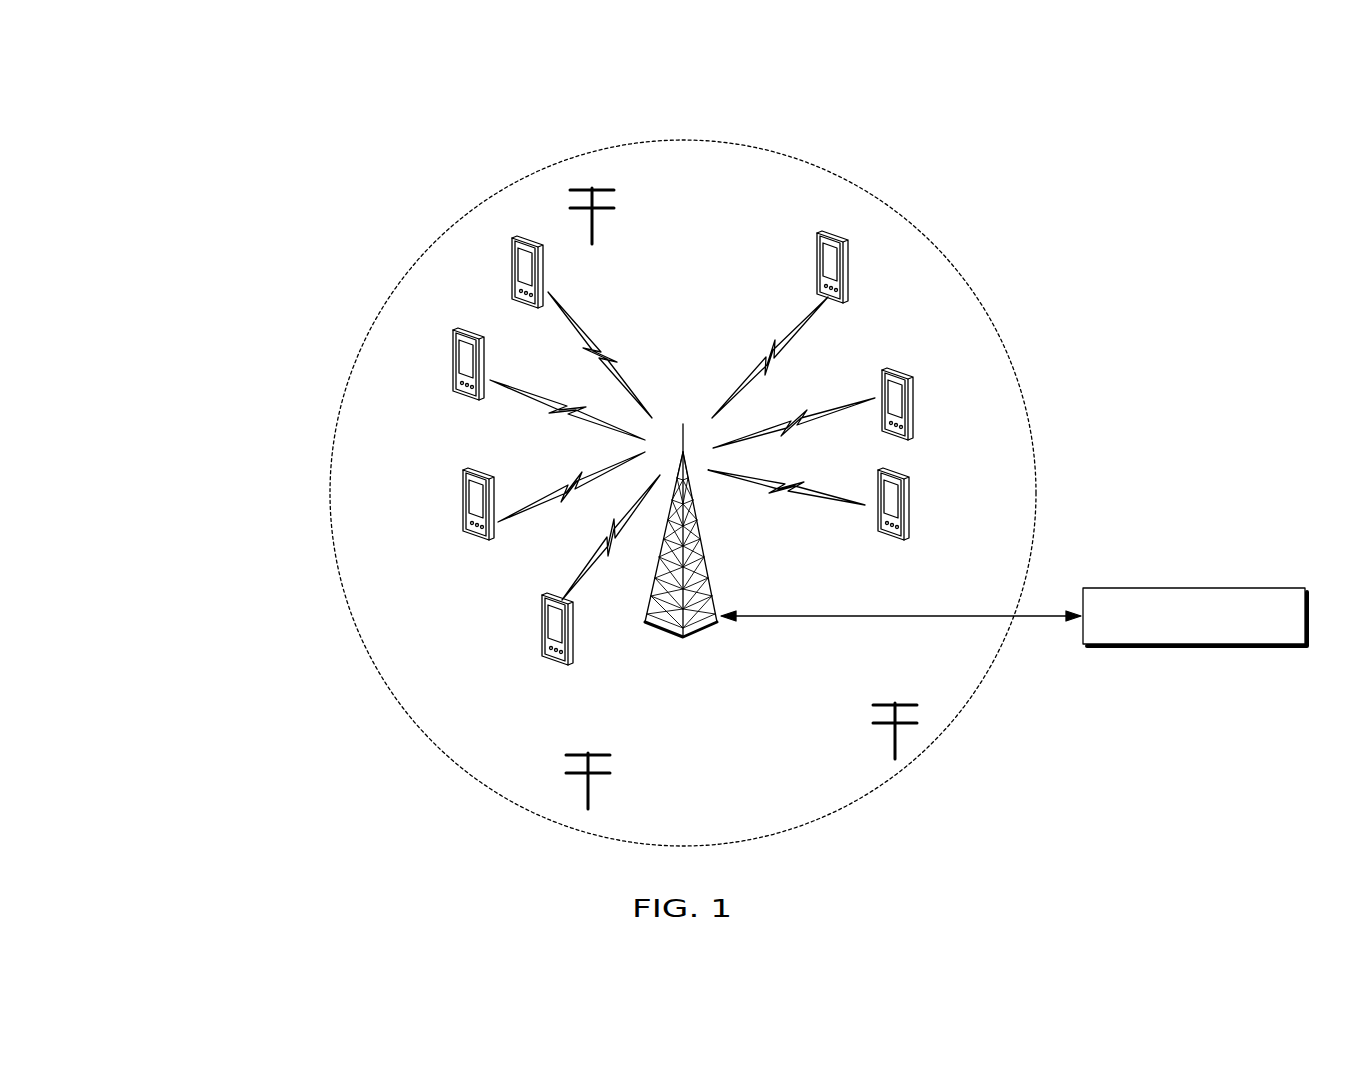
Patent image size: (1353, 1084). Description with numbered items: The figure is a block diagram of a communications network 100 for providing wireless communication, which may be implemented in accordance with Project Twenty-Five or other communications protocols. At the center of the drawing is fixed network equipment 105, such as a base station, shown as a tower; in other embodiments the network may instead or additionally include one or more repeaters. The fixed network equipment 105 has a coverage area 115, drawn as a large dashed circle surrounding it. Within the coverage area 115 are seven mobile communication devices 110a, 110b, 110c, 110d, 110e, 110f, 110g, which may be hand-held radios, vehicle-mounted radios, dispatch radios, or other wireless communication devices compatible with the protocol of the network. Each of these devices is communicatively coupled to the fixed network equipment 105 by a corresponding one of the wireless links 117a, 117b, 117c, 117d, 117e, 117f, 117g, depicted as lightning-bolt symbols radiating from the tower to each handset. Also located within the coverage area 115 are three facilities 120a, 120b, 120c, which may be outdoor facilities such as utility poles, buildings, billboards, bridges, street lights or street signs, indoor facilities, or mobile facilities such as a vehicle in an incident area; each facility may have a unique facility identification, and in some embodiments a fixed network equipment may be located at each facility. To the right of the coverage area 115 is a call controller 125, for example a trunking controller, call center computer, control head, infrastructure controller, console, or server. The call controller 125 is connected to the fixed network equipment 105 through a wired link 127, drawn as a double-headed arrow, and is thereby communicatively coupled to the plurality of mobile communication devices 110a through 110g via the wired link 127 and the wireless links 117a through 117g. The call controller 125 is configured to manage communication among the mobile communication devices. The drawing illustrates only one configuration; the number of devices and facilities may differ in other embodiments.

The communications network 100 is at (433, 171).
The fixed network equipment 105 is at (703, 630).
The mobile communication device 110a is at (541, 643).
The mobile communication device 110b is at (473, 532).
The mobile communication device 110c is at (463, 397).
The mobile communication device 110d is at (511, 273).
The mobile communication device 110e is at (852, 287).
The mobile communication device 110f is at (917, 405).
The mobile communication device 110g is at (913, 510).
The coverage area 115 is at (681, 140).
The wireless link 117a is at (597, 565).
The wireless link 117b is at (518, 517).
The wireless link 117c is at (512, 388).
The wireless link 117d is at (582, 332).
The wireless link 117e is at (818, 313).
The wireless link 117f is at (828, 430).
The wireless link 117g is at (828, 497).
The facility 120a is at (591, 790).
The facility 120b is at (596, 218).
The facility 120c is at (893, 735).
The call controller 125 is at (1196, 648).
The wired link 127 is at (975, 618).